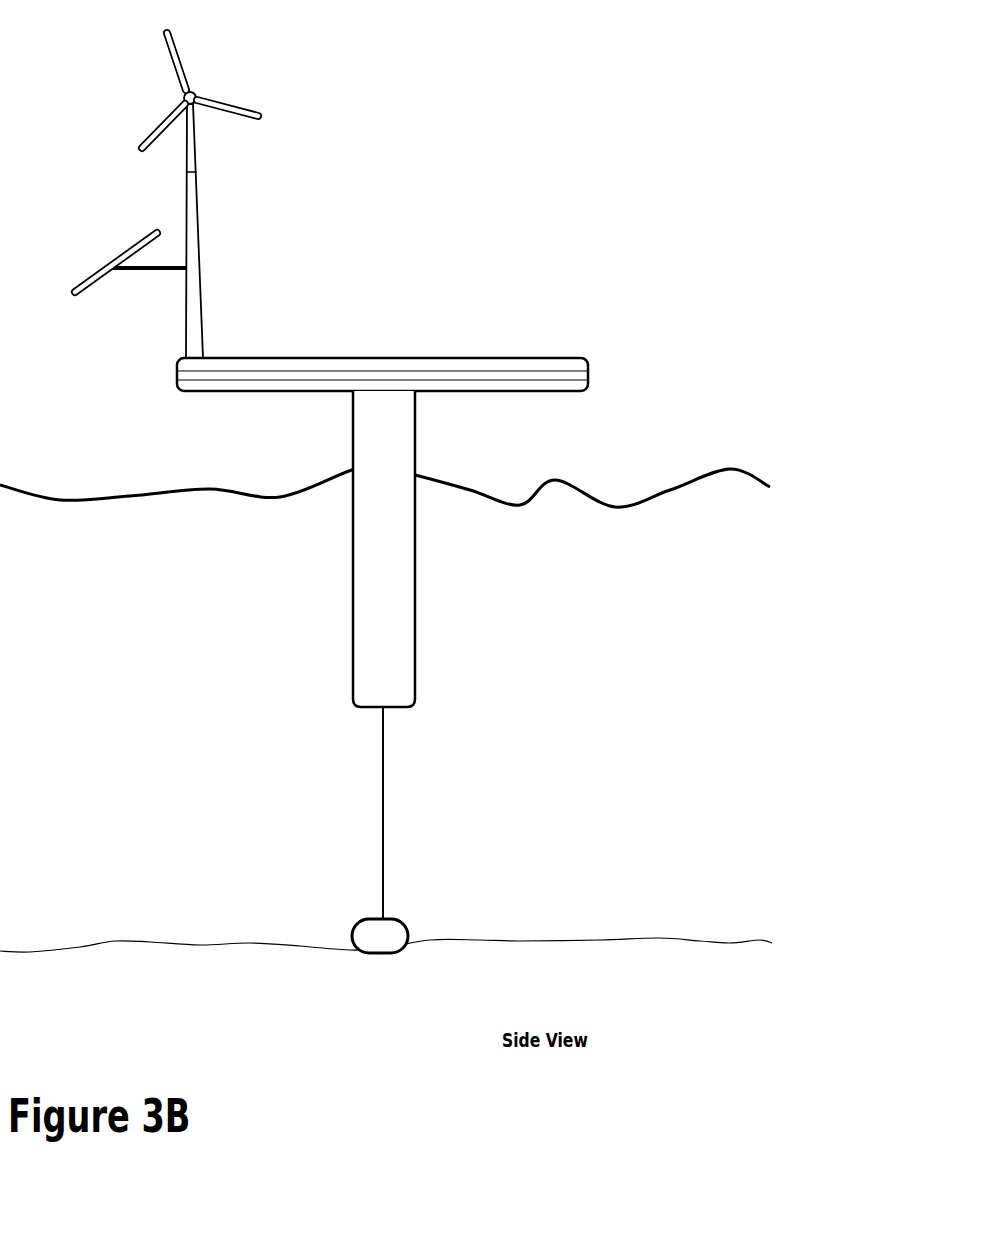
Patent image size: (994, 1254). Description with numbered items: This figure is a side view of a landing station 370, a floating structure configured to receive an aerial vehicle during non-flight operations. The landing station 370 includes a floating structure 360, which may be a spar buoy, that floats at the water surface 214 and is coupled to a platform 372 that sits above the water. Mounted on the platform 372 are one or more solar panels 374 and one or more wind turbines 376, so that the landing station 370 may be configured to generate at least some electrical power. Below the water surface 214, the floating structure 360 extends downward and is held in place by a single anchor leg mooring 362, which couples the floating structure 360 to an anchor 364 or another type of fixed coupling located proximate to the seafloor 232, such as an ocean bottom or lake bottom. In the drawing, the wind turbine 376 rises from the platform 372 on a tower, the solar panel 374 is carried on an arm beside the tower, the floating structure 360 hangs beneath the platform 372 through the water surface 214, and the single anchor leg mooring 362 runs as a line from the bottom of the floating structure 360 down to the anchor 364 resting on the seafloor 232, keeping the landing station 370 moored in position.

The landing station 370 is at (607, 146).
The wind turbine 376 is at (161, 195).
The solar panel 374 is at (109, 247).
The platform 372 is at (382, 354).
The floating structure 360 is at (419, 549).
The water surface 214 is at (385, 477).
The single anchor leg mooring 362 is at (419, 813).
The anchor 364 is at (407, 918).
The seafloor 232 is at (386, 923).